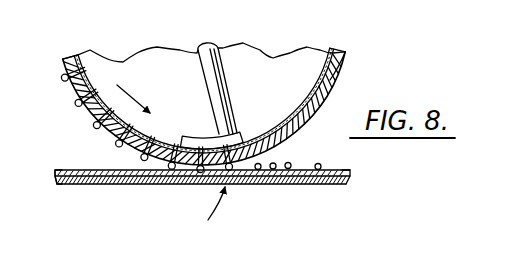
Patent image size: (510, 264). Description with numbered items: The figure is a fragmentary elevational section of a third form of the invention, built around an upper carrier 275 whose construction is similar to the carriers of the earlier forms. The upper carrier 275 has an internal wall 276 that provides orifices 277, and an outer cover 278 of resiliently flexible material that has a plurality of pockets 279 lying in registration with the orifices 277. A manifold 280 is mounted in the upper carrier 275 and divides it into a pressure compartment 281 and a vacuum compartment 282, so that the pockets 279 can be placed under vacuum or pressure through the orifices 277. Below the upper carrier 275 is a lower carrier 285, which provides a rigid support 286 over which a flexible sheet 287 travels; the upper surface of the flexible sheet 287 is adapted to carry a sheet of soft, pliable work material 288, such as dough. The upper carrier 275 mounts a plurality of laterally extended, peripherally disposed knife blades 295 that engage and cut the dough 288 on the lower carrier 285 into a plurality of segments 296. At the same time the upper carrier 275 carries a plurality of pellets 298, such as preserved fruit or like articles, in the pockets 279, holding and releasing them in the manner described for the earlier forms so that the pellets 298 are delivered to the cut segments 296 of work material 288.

The upper carrier 275 is at (352, 64).
The internal wall 276 is at (333, 53).
The orifices 277 is at (322, 55).
The outer cover 278 is at (345, 50).
The pockets 279 is at (348, 72).
The manifold 280 is at (245, 132).
The pressure compartment 281 is at (203, 140).
The vacuum compartment 282 is at (122, 75).
The lower carrier 285 is at (196, 212).
The rigid support 286 is at (303, 171).
The flexible sheet 287 is at (346, 176).
The work material 288 is at (72, 170).
The knife blades 295 is at (90, 119).
The segments 296 is at (273, 171).
The pellets 298 is at (141, 156).